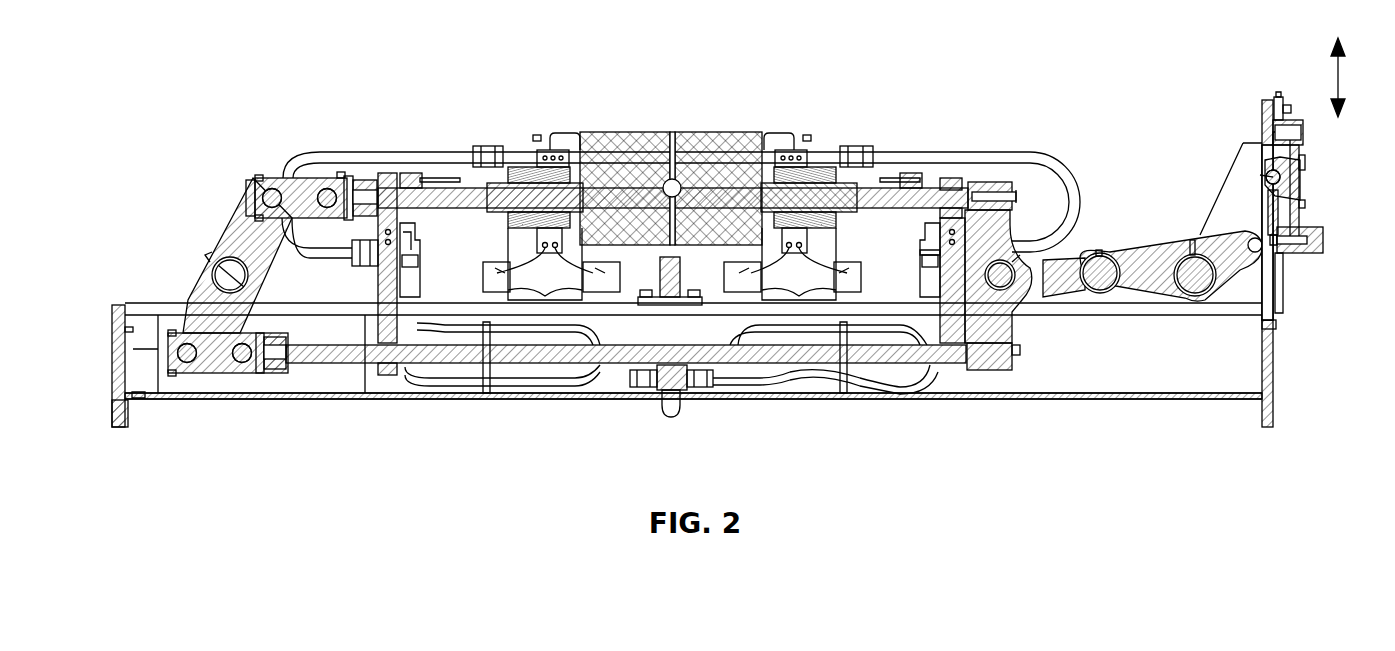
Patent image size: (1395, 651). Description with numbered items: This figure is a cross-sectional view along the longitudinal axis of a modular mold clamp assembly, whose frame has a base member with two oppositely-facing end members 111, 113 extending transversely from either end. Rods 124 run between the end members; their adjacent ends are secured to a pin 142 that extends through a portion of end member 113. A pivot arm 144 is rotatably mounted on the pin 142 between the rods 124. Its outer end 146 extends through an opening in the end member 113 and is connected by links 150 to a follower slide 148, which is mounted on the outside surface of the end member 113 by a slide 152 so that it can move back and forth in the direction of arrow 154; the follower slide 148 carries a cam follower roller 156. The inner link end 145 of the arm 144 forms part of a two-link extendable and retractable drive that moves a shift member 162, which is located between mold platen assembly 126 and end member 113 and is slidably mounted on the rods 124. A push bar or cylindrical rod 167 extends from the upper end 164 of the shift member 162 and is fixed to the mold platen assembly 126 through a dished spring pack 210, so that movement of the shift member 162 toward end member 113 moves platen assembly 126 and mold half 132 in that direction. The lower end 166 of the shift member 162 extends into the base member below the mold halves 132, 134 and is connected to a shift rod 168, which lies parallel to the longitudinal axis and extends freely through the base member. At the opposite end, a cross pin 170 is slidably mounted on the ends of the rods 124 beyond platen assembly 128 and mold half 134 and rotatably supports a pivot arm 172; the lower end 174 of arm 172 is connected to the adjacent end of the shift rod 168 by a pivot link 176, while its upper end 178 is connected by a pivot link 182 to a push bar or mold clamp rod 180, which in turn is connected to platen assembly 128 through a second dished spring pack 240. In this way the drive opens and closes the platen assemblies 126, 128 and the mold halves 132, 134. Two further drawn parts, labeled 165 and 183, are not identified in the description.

The end member 111 is at (120, 400).
The end member 113 is at (1276, 378).
The rods 124 is at (905, 275).
The mold platen assembly 126 is at (740, 132).
The platen assembly 128 is at (608, 132).
The mold half 132 is at (688, 132).
The mold half 134 is at (660, 132).
The pin 142 is at (1205, 300).
The pivot arm 144 is at (1155, 298).
The inner link end 145 is at (1104, 262).
The outer end 146 is at (1198, 248).
The follower slide 148 is at (1300, 203).
The links 150 is at (1258, 182).
The slide 152 is at (1303, 170).
The arrow 154 is at (1335, 72).
The cam follower roller 156 is at (1325, 235).
The shift member 162 is at (1005, 205).
The upper end 164 is at (997, 188).
The fluid conduit 165 is at (233, 165).
The lower end 166 is at (985, 370).
The push bar or cylindrical rod 167 is at (925, 195).
The shift rod 168 is at (565, 360).
The cross pin 170 is at (222, 275).
The pivot arm 172 is at (246, 220).
The lower end 174 is at (195, 373).
The pivot link 176 is at (240, 373).
The upper end 178 is at (288, 180).
The push bar or mold clamp rod 180 is at (430, 200).
The pivot link 182 is at (320, 180).
The end plate 183 is at (356, 182).
The dished spring pack 210 is at (810, 157).
The dished spring pack 240 is at (535, 157).